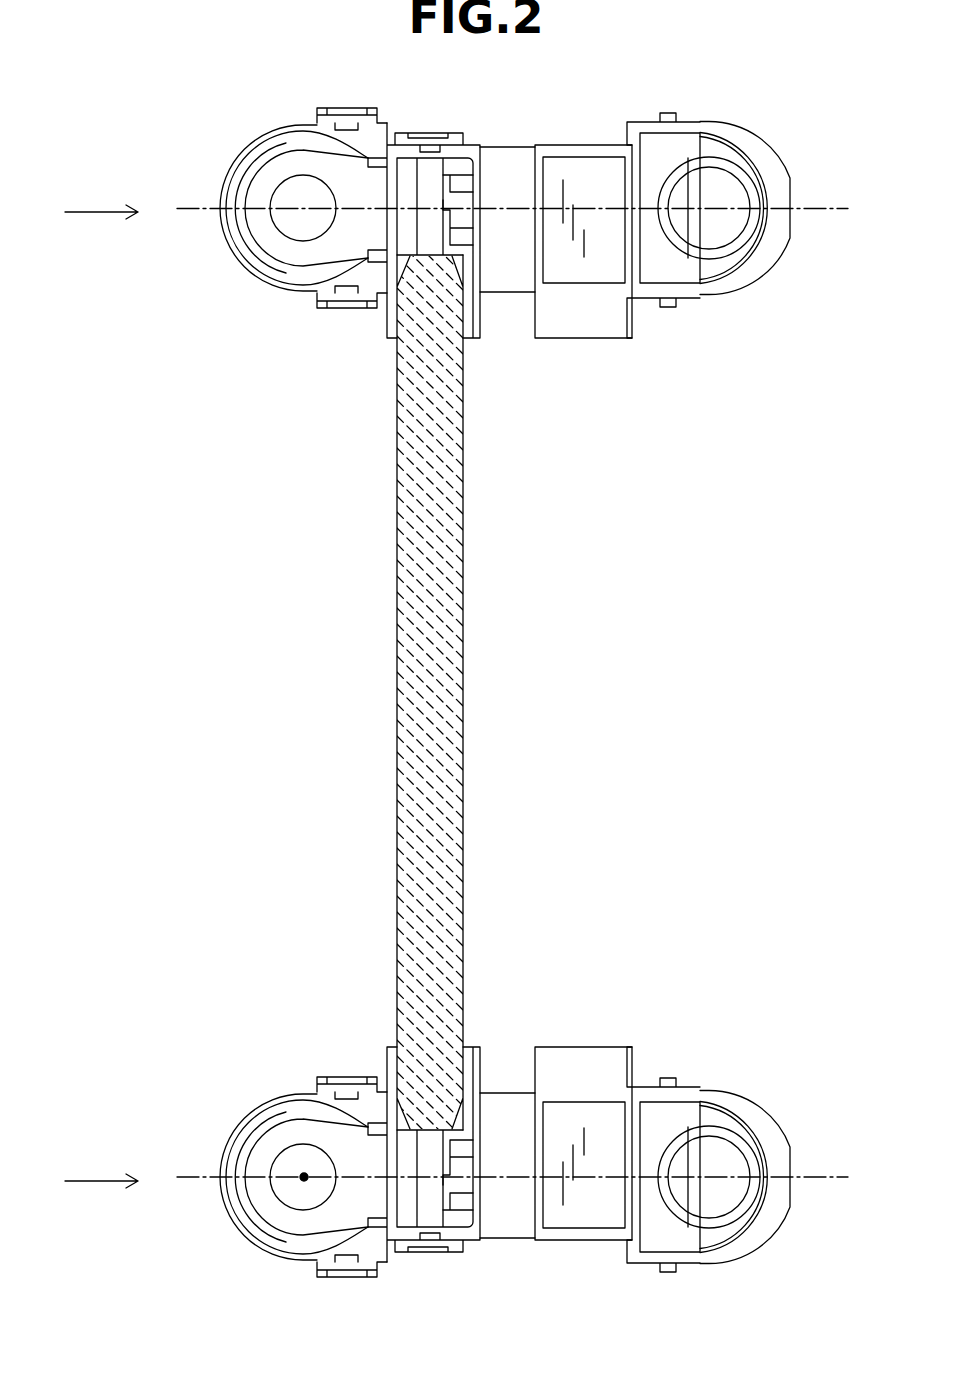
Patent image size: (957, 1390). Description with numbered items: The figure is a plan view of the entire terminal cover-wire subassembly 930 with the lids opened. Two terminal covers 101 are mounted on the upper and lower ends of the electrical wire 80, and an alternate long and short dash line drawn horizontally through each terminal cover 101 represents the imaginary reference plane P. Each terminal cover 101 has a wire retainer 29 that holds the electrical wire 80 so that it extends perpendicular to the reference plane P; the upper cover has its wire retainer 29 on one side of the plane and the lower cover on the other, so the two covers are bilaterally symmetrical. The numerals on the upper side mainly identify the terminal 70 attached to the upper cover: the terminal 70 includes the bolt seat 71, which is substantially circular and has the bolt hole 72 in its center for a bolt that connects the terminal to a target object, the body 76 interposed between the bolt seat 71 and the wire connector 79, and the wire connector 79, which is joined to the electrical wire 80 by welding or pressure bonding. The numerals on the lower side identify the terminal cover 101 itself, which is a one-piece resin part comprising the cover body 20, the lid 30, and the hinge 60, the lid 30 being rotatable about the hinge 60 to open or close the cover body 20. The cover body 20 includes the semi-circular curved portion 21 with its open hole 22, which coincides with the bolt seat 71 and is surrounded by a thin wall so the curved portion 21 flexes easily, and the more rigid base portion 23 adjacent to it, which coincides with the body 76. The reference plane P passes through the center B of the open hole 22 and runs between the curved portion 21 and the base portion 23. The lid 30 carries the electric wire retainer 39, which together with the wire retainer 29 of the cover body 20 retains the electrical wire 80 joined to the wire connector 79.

The cover body 20 is at (357, 1169).
The curved portion 21 is at (235, 1127).
The open hole 22 is at (285, 1115).
The base portion 23 is at (348, 1056).
The wire retainer 29 is at (478, 1053).
The lid 30 is at (622, 1290).
The electric wire retainer 39 is at (590, 1064).
The hinge 60 is at (514, 1218).
The terminal 70 is at (264, 176).
The bolt seat 71 is at (322, 168).
The bolt hole 72 is at (295, 221).
The body 76 is at (373, 193).
The wire connector 79 is at (430, 200).
The electrical wire 80 is at (433, 647).
The terminal cover 101 is at (810, 140).
The terminal cover-wire subassembly 930 is at (715, 662).
The center of the open hole B is at (303, 1180).
The reference plane P is at (834, 218).